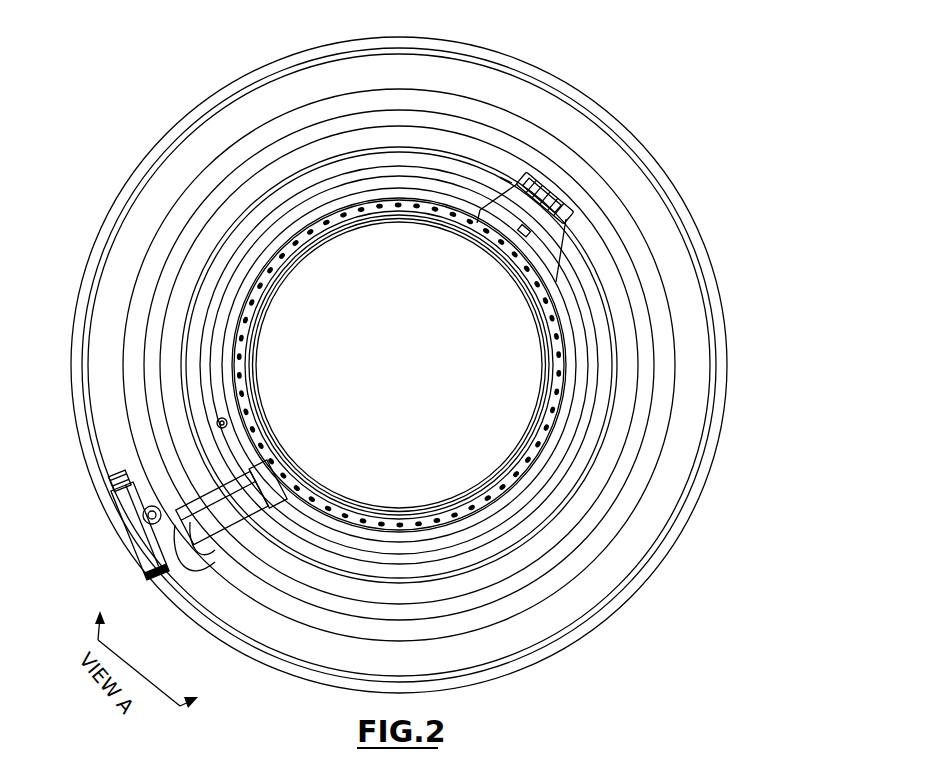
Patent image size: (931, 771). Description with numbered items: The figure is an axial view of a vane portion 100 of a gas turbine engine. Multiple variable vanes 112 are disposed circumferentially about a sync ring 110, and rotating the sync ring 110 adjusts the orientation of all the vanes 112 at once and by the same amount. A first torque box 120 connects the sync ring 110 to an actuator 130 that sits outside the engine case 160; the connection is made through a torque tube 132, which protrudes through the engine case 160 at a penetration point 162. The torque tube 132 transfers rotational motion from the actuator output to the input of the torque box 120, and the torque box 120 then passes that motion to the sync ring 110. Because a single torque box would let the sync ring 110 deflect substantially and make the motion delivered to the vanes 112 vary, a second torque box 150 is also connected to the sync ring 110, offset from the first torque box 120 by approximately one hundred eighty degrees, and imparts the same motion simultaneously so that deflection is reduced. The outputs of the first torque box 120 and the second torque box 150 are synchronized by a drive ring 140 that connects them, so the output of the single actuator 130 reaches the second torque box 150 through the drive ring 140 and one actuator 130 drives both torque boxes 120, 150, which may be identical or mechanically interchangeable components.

The vane portion 100 is at (769, 122).
The sync ring 110 is at (328, 220).
The vanes 112 is at (347, 213).
The torque box 120 is at (258, 473).
The actuator 130 is at (130, 570).
The torque tube 132 is at (237, 522).
The drive ring 140 is at (530, 507).
The second torque box 150 is at (582, 224).
The engine case 160 is at (170, 270).
The penetration point 162 is at (217, 550).